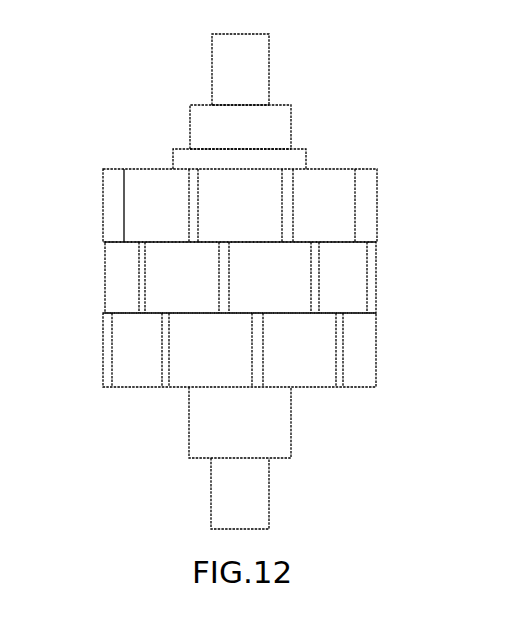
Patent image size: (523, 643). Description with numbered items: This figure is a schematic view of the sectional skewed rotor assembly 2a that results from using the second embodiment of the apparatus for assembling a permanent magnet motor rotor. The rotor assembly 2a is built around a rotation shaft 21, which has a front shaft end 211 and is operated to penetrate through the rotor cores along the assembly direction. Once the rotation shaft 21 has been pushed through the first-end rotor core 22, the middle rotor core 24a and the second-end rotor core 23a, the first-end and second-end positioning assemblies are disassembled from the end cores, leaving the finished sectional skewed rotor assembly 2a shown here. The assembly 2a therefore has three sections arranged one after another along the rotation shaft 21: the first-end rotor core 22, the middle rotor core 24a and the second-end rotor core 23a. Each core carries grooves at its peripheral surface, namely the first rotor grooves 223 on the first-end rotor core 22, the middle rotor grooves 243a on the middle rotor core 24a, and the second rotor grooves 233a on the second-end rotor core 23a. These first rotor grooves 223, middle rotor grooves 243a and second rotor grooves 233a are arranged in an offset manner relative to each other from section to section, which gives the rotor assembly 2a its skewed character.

The sectional skewed rotor assembly 2a is at (413, 80).
The rotation shaft 21 is at (262, 72).
The front shaft end 211 is at (262, 498).
The first-end rotor core 22 is at (208, 183).
The first rotor grooves 223 is at (190, 196).
The middle rotor core 24a is at (233, 277).
The middle rotor grooves 243a is at (225, 278).
The second-end rotor core 23a is at (233, 350).
The second rotor grooves 233a is at (255, 345).